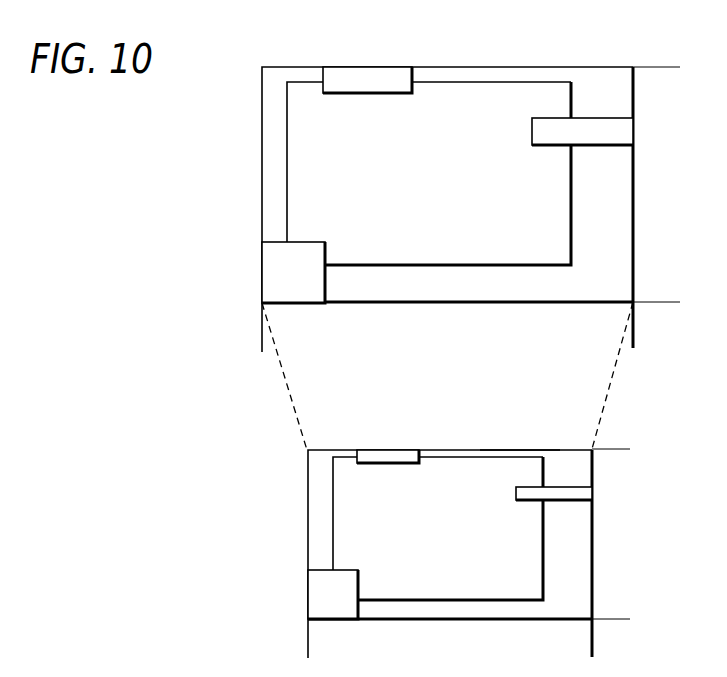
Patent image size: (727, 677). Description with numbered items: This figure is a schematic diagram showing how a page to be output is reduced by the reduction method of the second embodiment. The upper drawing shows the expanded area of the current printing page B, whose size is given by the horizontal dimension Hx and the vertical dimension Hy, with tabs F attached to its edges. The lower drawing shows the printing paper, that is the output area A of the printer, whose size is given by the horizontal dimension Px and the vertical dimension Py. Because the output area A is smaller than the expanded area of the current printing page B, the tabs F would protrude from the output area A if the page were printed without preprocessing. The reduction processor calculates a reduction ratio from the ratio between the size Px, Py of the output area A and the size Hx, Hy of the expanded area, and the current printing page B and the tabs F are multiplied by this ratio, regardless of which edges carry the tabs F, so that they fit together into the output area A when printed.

The output area A is at (519, 434).
The current printing page B is at (462, 93).
The tabs F is at (365, 73).
The horizontal size of expanded area Hx is at (274, 330).
The vertical size of expanded area Hy is at (658, 78).
The horizontal size of output area Px is at (580, 642).
The vertical size of output area Py is at (612, 460).